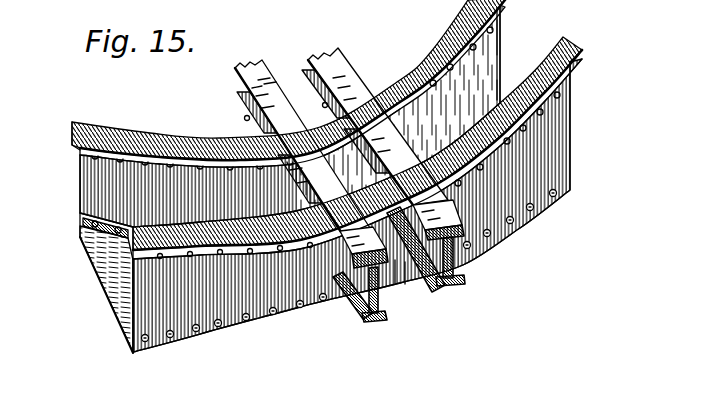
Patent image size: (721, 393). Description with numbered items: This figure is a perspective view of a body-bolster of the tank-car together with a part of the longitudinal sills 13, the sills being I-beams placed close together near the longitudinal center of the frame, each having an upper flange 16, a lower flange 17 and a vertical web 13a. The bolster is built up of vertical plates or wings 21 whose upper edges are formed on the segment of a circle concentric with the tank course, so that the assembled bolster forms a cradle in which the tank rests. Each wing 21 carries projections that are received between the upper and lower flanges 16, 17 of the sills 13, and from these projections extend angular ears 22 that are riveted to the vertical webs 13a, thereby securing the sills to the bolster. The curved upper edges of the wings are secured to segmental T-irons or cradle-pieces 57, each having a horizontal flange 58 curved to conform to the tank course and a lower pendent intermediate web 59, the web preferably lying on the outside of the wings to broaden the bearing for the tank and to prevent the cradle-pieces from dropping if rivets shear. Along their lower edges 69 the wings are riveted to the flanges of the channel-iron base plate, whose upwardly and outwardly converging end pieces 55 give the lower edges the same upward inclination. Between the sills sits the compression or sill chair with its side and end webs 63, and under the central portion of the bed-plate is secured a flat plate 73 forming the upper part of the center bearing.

The longitudinal sills 13 is at (341, 137).
The vertical web 13a is at (243, 97).
The upper flange 16 is at (265, 73).
The lower flange 17 is at (371, 318).
The wings 21 is at (83, 192).
The angular ears 22 is at (332, 307).
The end pieces 55 is at (132, 330).
The segmental T-irons 57 is at (577, 68).
The horizontal flange 58 is at (453, 38).
The pendent intermediate web 59 is at (72, 147).
The end webs 63 is at (402, 288).
The lower edges 69 is at (247, 328).
The flat plate 73 is at (422, 286).